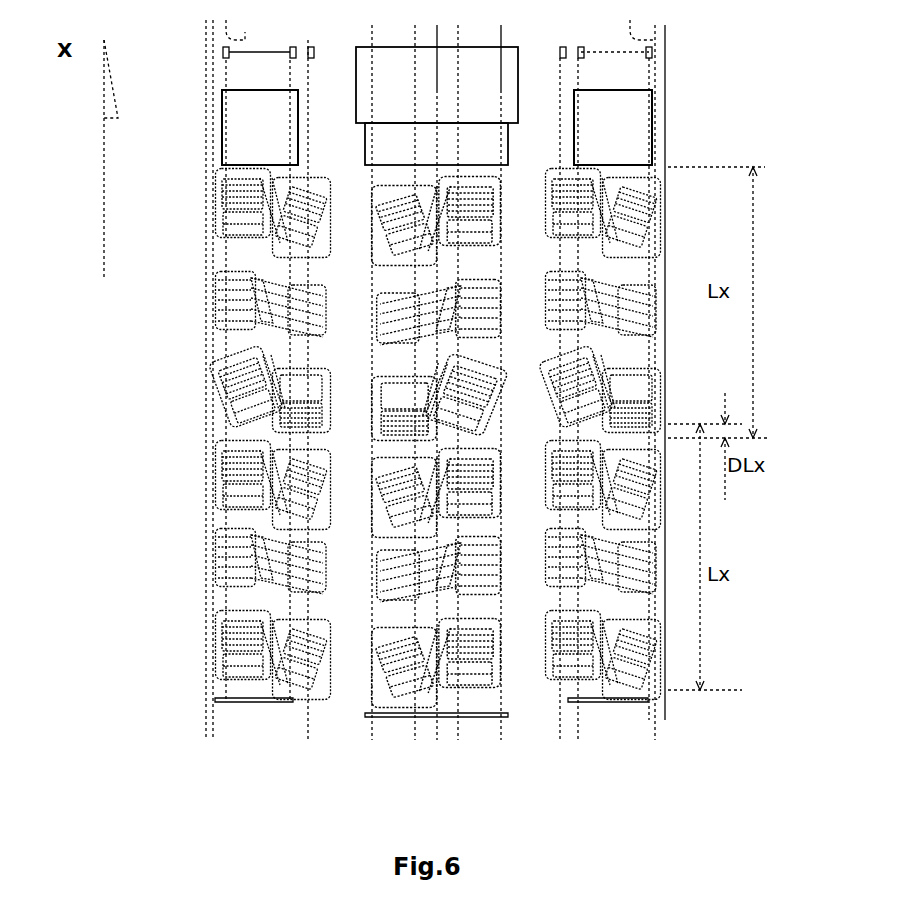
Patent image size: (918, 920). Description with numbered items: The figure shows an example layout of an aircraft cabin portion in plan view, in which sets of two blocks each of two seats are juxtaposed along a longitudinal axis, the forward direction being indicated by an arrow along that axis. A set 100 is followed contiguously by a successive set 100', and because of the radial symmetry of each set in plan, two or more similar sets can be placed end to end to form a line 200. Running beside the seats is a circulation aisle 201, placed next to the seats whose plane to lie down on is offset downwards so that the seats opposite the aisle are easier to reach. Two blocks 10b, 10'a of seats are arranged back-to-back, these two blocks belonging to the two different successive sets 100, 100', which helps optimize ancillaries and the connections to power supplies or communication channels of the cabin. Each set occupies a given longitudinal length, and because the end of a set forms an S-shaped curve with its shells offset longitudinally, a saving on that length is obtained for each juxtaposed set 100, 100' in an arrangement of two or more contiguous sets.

The set 100 is at (190, 265).
The successive set 100' is at (188, 614).
The block of seats 10b is at (250, 372).
The block of seats 10'a is at (199, 485).
The line 200 is at (258, 750).
The circulation aisle 201 is at (340, 655).